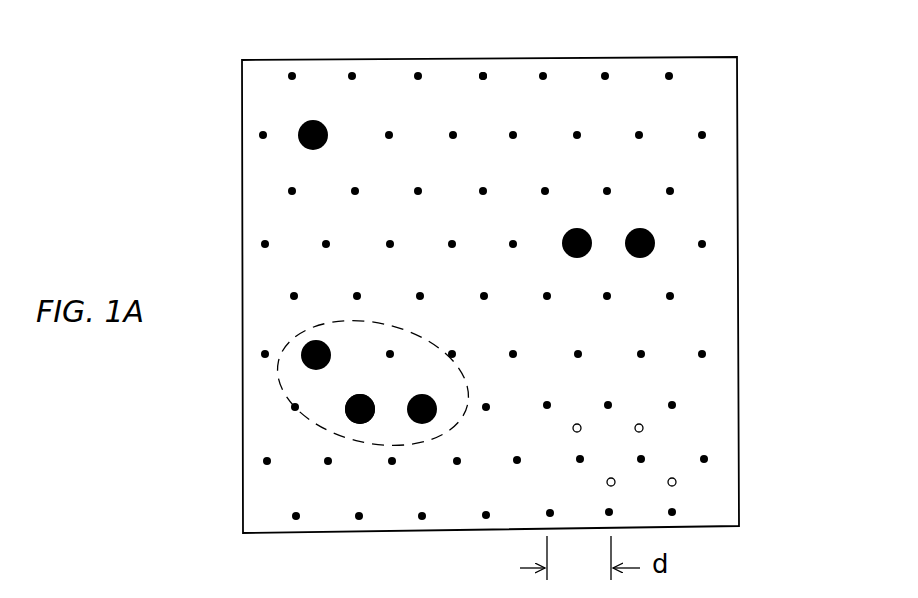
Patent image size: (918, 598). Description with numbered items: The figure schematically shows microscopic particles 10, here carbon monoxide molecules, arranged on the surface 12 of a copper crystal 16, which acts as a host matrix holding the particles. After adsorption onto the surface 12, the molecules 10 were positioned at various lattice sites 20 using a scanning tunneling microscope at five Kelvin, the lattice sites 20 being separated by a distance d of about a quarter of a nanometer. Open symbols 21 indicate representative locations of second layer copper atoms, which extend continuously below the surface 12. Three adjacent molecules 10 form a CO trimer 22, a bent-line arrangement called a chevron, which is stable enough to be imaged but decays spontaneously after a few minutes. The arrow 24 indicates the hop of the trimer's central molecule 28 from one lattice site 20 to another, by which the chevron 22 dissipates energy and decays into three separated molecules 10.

The microscopic particles 10 is at (298, 141).
The surface 12 is at (642, 108).
The crystal 16 is at (756, 331).
The lattice sites 20 is at (483, 57).
The second layer copper atoms 21 is at (643, 428).
The CO trimer 22 is at (290, 334).
The arrow 24 is at (331, 455).
The central molecule 28 is at (360, 424).